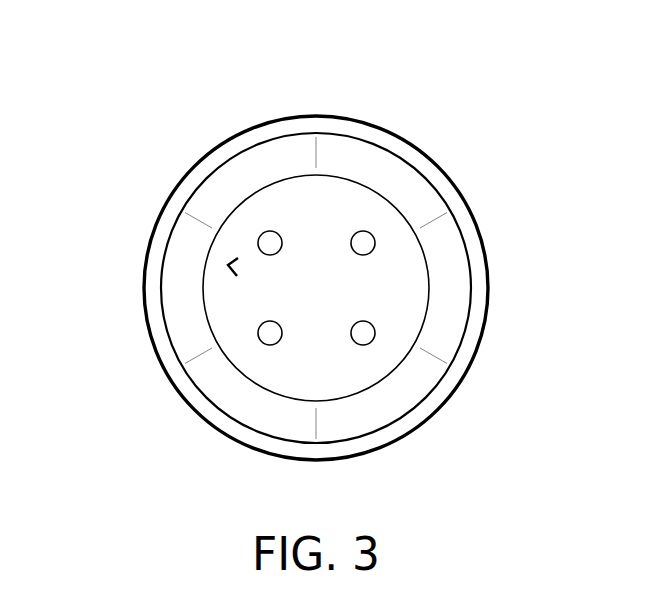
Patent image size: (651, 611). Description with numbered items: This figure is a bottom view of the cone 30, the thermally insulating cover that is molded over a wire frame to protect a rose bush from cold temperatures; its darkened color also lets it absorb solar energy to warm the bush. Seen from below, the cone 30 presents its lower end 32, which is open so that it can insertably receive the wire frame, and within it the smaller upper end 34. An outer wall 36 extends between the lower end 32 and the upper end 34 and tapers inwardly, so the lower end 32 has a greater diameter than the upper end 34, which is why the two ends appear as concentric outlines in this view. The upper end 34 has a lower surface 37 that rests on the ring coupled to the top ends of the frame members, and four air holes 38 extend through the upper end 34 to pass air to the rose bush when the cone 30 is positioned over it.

The cone 30 is at (228, 120).
The lower end 32 is at (157, 273).
The upper end 34 is at (317, 210).
The outer wall 36 is at (436, 287).
The lower surface 37 is at (238, 258).
The air holes 38 is at (272, 230).